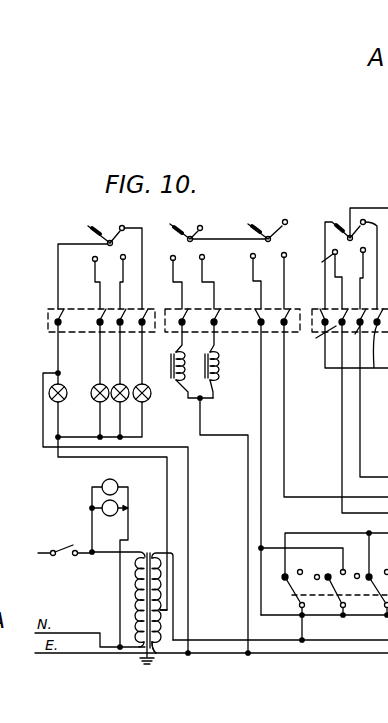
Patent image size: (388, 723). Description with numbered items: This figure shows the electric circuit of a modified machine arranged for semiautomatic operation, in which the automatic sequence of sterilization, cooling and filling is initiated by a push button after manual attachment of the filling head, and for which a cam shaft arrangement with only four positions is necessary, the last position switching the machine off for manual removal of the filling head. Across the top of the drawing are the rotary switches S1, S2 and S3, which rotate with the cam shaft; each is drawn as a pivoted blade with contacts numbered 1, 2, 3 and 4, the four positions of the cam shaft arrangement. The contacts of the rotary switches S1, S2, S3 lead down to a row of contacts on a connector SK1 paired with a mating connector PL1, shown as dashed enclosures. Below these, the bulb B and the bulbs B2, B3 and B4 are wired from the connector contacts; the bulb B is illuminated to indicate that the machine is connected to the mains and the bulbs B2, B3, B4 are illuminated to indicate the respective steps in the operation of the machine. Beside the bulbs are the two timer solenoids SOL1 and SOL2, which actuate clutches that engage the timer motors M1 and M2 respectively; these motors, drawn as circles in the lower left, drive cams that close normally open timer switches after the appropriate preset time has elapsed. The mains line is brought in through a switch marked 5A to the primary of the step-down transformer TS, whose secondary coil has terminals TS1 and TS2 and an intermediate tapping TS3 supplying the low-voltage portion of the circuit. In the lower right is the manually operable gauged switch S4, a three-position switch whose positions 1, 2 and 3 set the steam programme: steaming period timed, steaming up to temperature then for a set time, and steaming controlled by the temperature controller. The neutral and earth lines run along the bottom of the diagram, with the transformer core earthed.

The rotary switch S1 is at (356, 250).
The rotary switch S2 is at (226, 218).
The rotary switch S3 is at (89, 254).
The manually operable gauged switch S4 is at (328, 606).
The socket SK1 is at (200, 328).
The plug PL1 is at (38, 346).
The bulb B is at (63, 381).
The bulb B2 is at (95, 389).
The bulb B3 is at (117, 402).
The bulb B4 is at (150, 401).
The timer solenoid SOL1 is at (190, 384).
The timer solenoid SOL2 is at (218, 382).
The timer motor M1 is at (117, 482).
The timer motor M2 is at (114, 504).
The 5A fuse switch 5A is at (54, 542).
The transformer TS is at (133, 586).
The transformer tap TS1 is at (166, 648).
The transformer secondary TS2 is at (156, 552).
The transformer tap TS3 is at (162, 606).
The first switch position 1 is at (363, 542).
The second switch position 2 is at (229, 412).
The third switch position 3 is at (234, 417).
The switch terminal 4 is at (254, 260).